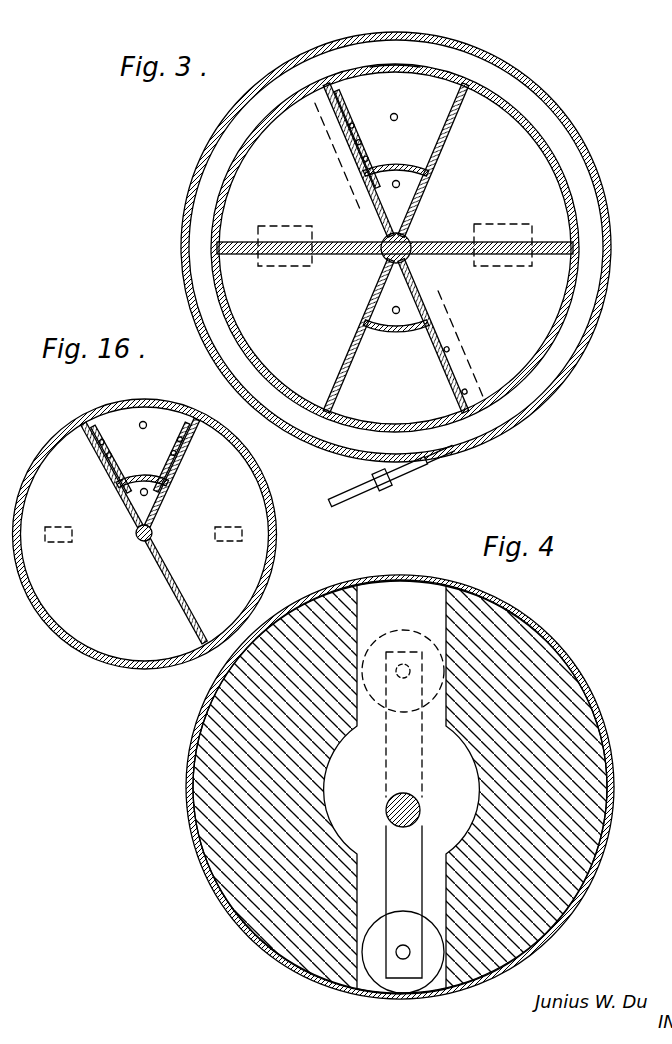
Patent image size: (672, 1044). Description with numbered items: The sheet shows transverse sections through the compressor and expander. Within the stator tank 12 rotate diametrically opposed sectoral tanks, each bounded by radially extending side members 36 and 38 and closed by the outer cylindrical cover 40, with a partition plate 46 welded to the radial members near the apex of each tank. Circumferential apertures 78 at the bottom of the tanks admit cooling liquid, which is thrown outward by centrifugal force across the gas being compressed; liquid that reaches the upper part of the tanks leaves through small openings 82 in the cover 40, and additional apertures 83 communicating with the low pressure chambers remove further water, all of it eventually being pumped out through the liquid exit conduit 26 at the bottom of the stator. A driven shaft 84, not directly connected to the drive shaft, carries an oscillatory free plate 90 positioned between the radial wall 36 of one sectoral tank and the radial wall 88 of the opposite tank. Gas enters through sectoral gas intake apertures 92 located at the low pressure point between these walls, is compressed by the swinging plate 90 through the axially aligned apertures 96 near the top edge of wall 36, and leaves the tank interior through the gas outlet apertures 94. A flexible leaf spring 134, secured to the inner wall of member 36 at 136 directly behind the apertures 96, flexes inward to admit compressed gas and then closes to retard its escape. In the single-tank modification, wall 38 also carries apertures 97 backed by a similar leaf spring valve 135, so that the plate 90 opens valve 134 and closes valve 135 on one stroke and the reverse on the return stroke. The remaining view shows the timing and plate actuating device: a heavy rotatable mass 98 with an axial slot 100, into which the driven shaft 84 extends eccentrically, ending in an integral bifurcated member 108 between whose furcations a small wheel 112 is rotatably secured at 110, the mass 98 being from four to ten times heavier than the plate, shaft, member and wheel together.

In FIG. 3, the stator tank 12 is at (548, 99).
In FIG. 3, the liquid exit conduit 26 is at (360, 494).
In FIG. 3, the radial side member 36 is at (329, 84).
In FIG. 16, the radial side member 36 is at (89, 418).
In FIG. 3, the radial side member 38 is at (460, 102).
In FIG. 16, the radial side member 38 is at (184, 466).
In FIG. 3, the outer cylindrical cover 40 is at (562, 175).
In FIG. 16, the outer cylindrical cover 40 is at (277, 553).
In FIG. 3, the partition plate 46 is at (380, 330).
In FIG. 3, the circumferential apertures 78 is at (401, 184).
In FIG. 16, the circumferential apertures 78 is at (157, 500).
In FIG. 3, the small openings 82 is at (394, 72).
In FIG. 3, the additional apertures 83 is at (216, 252).
In FIG. 3, the driven shaft 84 is at (406, 236).
In FIG. 16, the driven shaft 84 is at (137, 542).
In FIG. 4, the driven shaft 84 is at (421, 813).
In FIG. 3, the radial wall 88 is at (349, 356).
In FIG. 3, the oscillatory free plate 90 is at (343, 256).
In FIG. 16, the oscillatory free plate 90 is at (193, 612).
In FIG. 3, the gas intake apertures 92 is at (288, 226).
In FIG. 16, the gas intake apertures 92 is at (229, 526).
In FIG. 3, the gas outlet apertures 94 is at (398, 116).
In FIG. 16, the gas outlet apertures 94 is at (147, 421).
In FIG. 3, the apertures 96 is at (342, 108).
In FIG. 16, the apertures 96 is at (96, 438).
In FIG. 16, the apertures 97 is at (186, 433).
In FIG. 4, the rotatable mass 98 is at (590, 681).
In FIG. 4, the axial slot 100 is at (433, 592).
In FIG. 4, the bifurcated member 108 is at (415, 883).
In FIG. 4, the wheel mounting 110 is at (412, 676).
In FIG. 4, the small wheel 112 is at (442, 652).
In FIG. 3, the leaf spring valve 134 is at (346, 122).
In FIG. 16, the leaf spring valve 134 is at (101, 432).
In FIG. 16, the leaf spring valve 135 is at (177, 440).
In FIG. 3, the securing point 136 is at (363, 146).